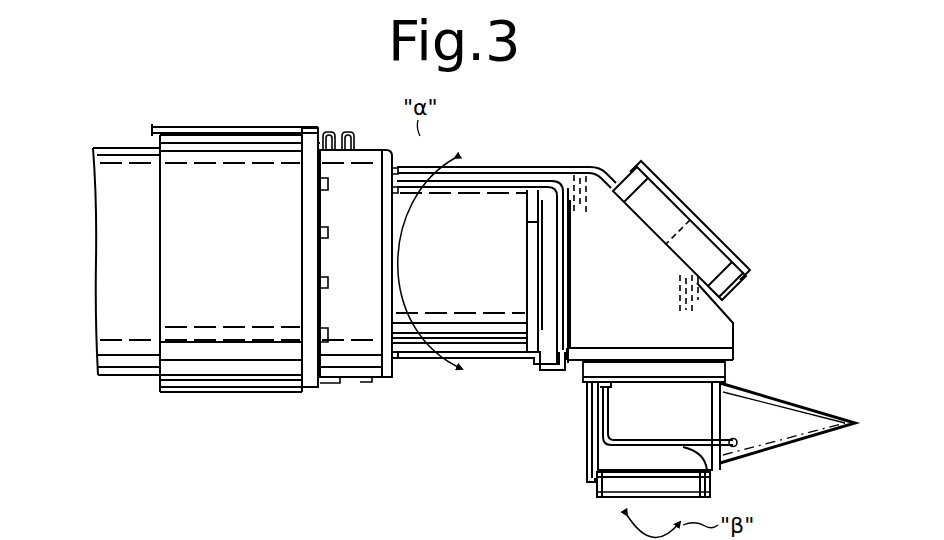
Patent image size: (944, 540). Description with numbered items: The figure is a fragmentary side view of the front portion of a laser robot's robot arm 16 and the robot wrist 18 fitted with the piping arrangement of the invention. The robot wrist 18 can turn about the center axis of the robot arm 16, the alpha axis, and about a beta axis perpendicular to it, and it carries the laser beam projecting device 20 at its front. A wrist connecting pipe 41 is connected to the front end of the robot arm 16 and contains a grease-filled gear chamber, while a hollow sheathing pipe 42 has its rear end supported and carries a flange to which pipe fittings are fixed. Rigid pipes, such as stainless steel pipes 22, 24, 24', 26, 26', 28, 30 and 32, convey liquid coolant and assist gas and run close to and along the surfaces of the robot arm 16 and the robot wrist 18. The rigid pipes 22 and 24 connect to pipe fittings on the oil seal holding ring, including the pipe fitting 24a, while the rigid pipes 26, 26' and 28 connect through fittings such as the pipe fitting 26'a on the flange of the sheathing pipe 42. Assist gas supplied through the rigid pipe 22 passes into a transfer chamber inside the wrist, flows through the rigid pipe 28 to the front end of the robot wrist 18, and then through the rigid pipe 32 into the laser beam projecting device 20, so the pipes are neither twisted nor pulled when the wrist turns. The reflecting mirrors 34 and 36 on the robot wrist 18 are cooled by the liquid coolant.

The robot arm 16 is at (128, 370).
The robot wrist 18 is at (266, 396).
The laser beam projecting device 20 is at (790, 446).
The rigid pipe 22 is at (253, 128).
The rigid pipe 24 is at (356, 229).
The rigid pipe 24' is at (325, 410).
The pipe fitting 24a is at (368, 383).
The rigid pipe 26 is at (504, 157).
The rigid pipe 26' is at (635, 409).
The pipe fitting 26'a is at (479, 383).
The rigid pipe 28 is at (500, 194).
The rigid pipe 30 is at (588, 444).
The rigid pipe 32 is at (707, 478).
The reflecting mirror 34 is at (707, 240).
The reflecting mirror 36 is at (612, 494).
The wrist connecting pipe 41 is at (208, 388).
The hollow sheathing pipe 42 is at (503, 336).